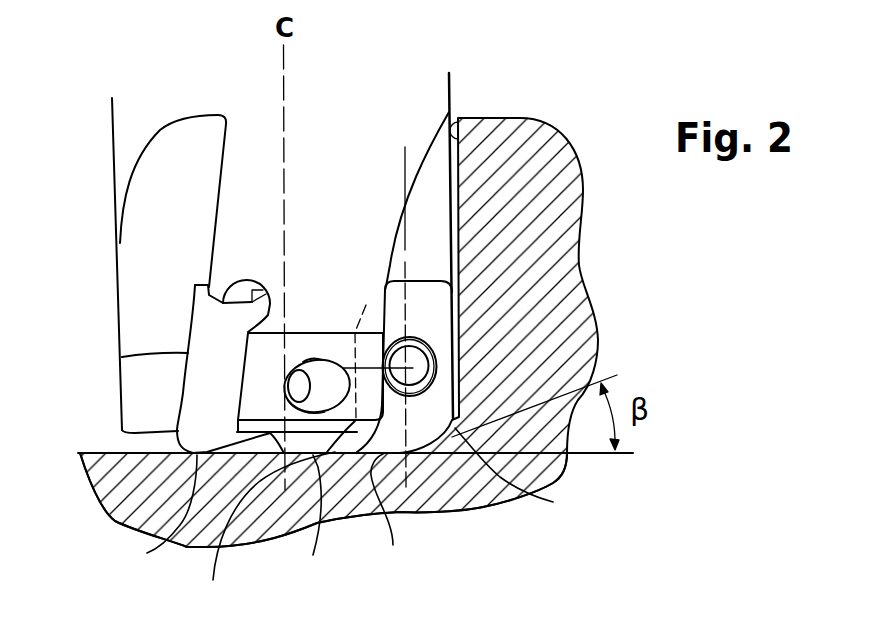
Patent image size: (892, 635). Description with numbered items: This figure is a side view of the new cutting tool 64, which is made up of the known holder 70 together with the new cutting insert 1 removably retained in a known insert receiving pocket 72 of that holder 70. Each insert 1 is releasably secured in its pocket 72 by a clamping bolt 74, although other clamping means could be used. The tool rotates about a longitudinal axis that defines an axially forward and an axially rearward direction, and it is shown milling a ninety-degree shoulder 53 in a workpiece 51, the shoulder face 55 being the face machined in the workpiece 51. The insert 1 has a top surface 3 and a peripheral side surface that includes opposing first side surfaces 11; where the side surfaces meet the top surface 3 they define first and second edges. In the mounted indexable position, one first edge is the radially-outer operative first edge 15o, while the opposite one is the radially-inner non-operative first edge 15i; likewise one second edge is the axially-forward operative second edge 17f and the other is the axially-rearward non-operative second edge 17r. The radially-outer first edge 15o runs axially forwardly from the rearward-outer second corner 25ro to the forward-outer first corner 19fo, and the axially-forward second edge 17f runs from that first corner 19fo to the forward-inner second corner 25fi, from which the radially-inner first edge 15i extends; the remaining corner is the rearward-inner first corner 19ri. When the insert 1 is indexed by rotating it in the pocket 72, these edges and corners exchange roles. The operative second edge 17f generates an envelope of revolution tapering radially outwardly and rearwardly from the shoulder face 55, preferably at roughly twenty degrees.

The cutting insert 1 is at (197, 275).
The top surface 3 is at (441, 430).
The first side surface 11 is at (223, 397).
The radially-outer first edge 15o is at (188, 348).
The radially-inner first edge 15i is at (213, 580).
The axially-rearward second edge 17r is at (405, 287).
The axially-forward second edge 17f is at (393, 545).
The rearward-inner first corner 19ri is at (366, 305).
The forward-outer first corner 19fo is at (147, 553).
The rearward-outer second corner 25ro is at (460, 280).
The forward-inner second corner 25fi is at (313, 555).
The workpiece 51 is at (485, 500).
The 90° shoulder 53 is at (500, 118).
The shoulder face 55 is at (113, 455).
The cutting tool 64 is at (461, 99).
The holder 70 is at (143, 118).
The insert receiving pocket 72 is at (167, 327).
The clamping bolt 74 is at (323, 390).